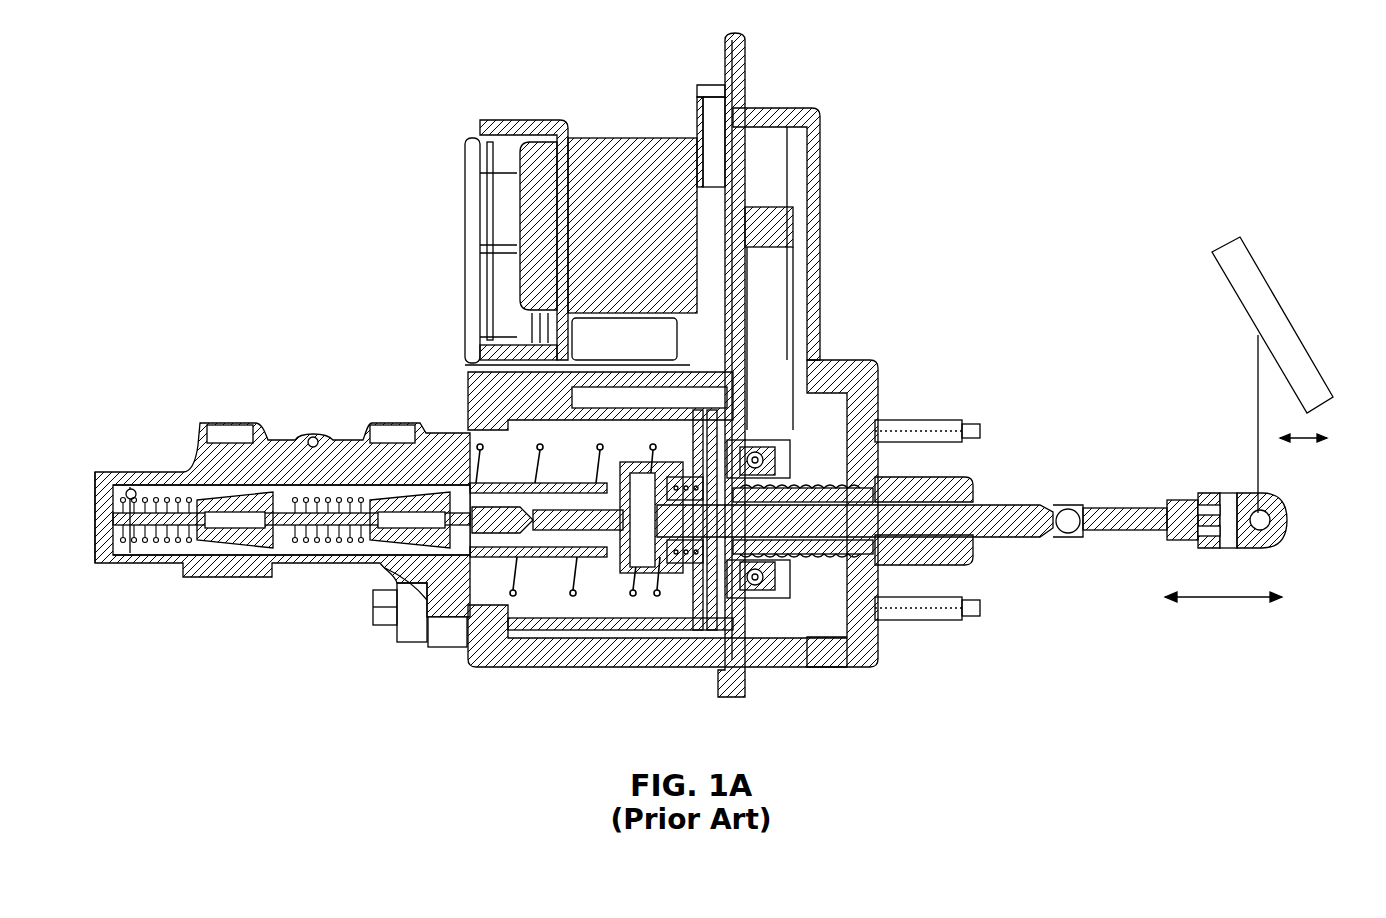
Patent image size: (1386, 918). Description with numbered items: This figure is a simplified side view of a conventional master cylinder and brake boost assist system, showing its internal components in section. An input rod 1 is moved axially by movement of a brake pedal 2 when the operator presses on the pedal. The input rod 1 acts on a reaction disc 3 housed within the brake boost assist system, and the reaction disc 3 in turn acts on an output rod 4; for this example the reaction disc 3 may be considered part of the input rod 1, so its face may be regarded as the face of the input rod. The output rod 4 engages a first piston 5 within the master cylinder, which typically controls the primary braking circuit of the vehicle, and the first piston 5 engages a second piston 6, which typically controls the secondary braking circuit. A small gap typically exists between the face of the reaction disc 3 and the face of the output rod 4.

The input rod 1 is at (1013, 520).
The brake pedal 2 is at (1253, 275).
The reaction disc 3 is at (600, 580).
The output rod 4 is at (520, 530).
The first piston 5 is at (318, 517).
The second piston 6 is at (133, 517).